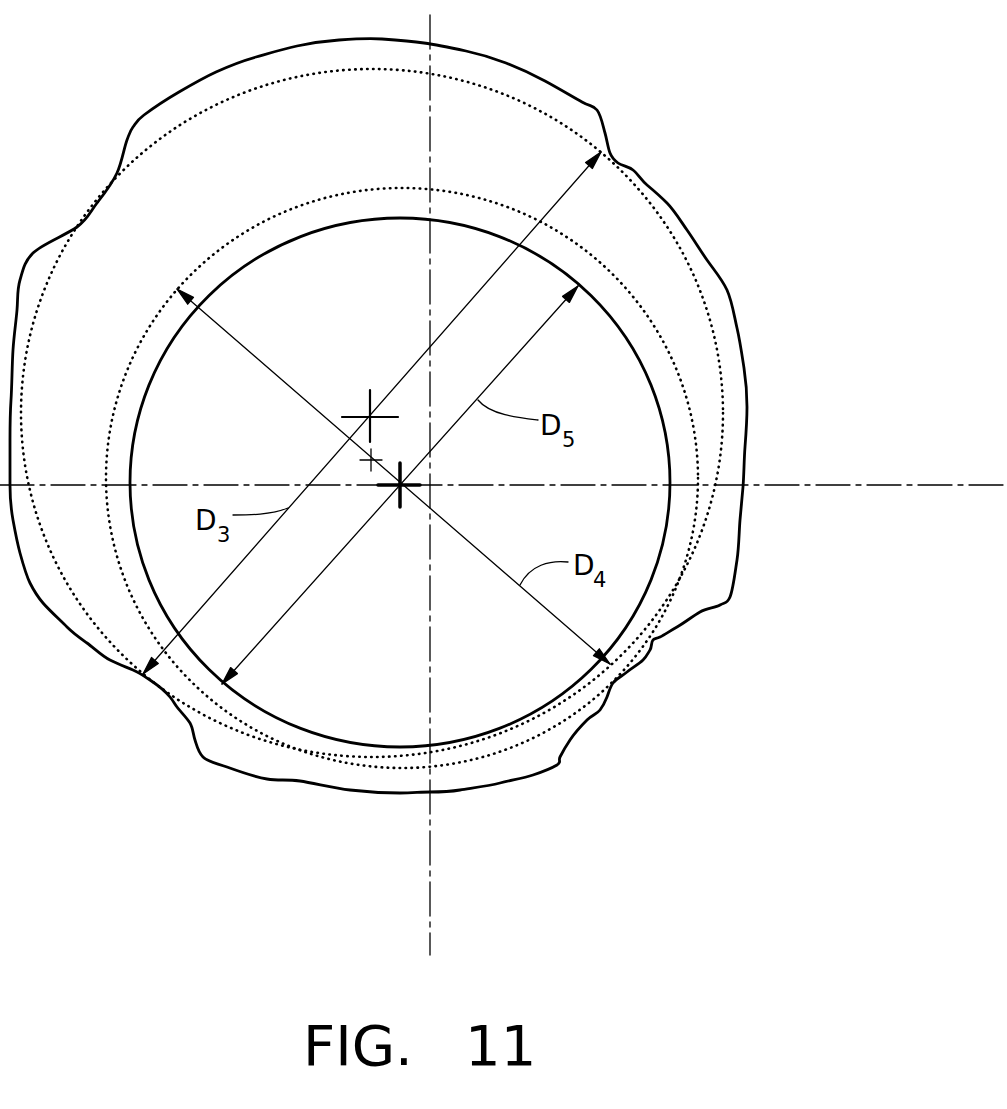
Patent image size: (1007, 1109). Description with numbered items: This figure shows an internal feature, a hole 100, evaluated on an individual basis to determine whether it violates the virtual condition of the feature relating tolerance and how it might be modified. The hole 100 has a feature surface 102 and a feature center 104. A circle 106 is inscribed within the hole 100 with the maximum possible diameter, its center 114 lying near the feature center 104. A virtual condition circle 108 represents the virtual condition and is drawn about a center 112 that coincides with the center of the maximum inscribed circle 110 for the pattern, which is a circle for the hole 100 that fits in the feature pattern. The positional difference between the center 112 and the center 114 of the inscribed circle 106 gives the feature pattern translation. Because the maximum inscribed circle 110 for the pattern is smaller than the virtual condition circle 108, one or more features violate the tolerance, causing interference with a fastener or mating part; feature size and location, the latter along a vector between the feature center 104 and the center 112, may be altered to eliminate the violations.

The hole 100 is at (385, 422).
The feature surface 102 is at (145, 113).
The feature center 104 is at (352, 398).
The circle 106 is at (278, 84).
The virtual condition circle 108 is at (557, 765).
The maximum inscribed circle for the pattern 110 is at (347, 742).
The center 112 is at (427, 477).
The center of inscribed circle 114 is at (364, 461).